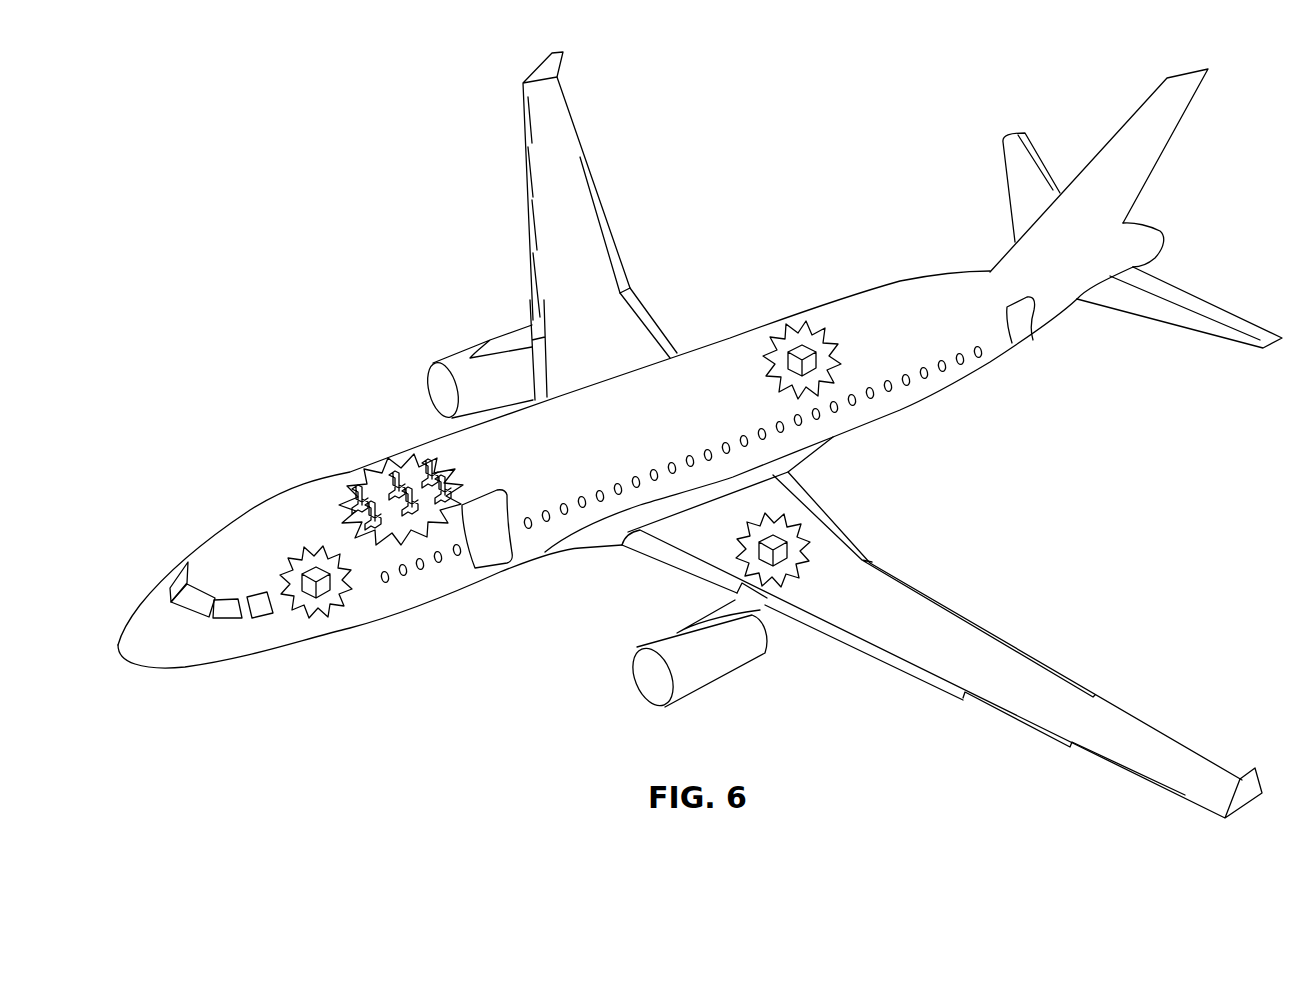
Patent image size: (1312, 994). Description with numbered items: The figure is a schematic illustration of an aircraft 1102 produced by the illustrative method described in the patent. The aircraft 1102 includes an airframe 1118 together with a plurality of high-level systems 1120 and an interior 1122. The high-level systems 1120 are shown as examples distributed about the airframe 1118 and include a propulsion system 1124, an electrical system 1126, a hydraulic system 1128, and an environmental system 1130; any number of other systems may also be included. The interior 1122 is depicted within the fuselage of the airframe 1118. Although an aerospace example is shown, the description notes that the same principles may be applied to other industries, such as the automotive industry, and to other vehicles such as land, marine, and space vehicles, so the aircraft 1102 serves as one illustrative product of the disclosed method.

The aircraft 1102 is at (350, 182).
The airframe 1118 is at (358, 438).
The high-level systems 1120 is at (1047, 510).
The interior 1122 is at (360, 490).
The propulsion system 1124 is at (455, 358).
The electrical system 1126 is at (320, 571).
The hydraulic system 1128 is at (796, 525).
The environmental system 1130 is at (795, 348).